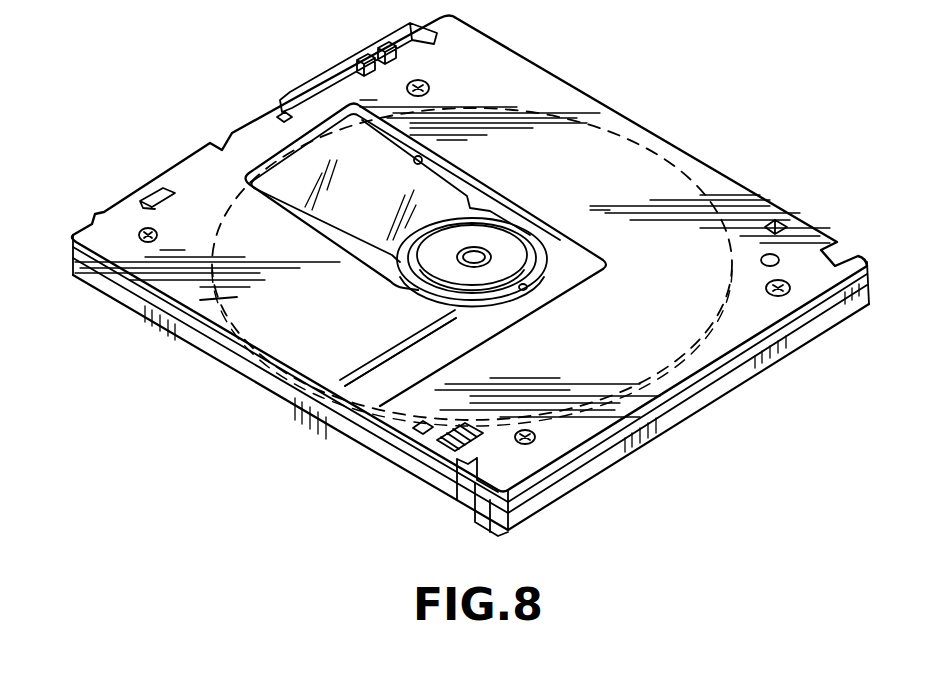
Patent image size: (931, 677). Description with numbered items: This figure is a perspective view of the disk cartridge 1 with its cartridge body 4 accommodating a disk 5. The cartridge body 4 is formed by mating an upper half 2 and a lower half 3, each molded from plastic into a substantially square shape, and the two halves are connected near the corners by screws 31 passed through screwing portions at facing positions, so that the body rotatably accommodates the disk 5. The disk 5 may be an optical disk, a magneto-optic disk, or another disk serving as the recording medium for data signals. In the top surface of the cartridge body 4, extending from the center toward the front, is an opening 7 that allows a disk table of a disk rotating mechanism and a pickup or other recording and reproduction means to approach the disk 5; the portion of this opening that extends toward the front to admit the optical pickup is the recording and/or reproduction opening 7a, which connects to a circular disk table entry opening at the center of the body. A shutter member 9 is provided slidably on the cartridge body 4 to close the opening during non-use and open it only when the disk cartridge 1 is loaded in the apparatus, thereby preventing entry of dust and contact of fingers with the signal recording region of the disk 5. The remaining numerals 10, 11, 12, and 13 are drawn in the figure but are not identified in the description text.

The disk cartridge 1 is at (557, 90).
The upper half 2 is at (240, 357).
The lower half 3 is at (328, 420).
The cartridge body 4 is at (470, 270).
The disk 5 is at (333, 153).
The opening 7 is at (420, 157).
The recording and/or reproduction opening 7a is at (523, 287).
The shutter member 9 is at (237, 297).
The center hole 10 is at (487, 252).
The disk 11 is at (527, 262).
The head slot 12 is at (420, 298).
The hub 13 is at (520, 265).
The screw 31 is at (415, 82).